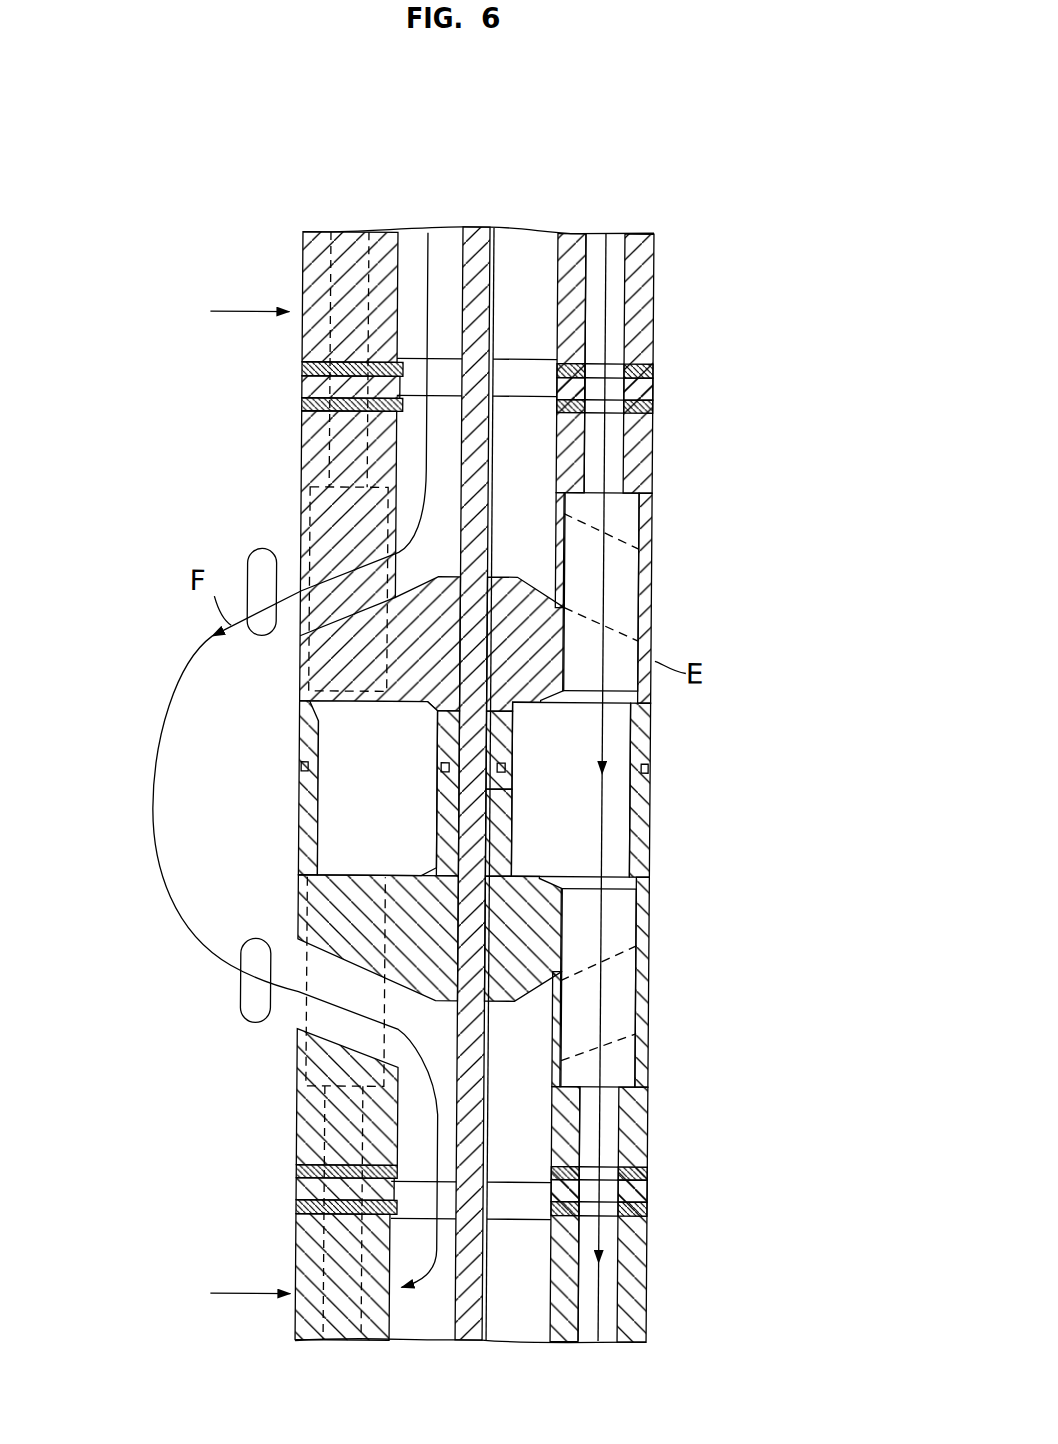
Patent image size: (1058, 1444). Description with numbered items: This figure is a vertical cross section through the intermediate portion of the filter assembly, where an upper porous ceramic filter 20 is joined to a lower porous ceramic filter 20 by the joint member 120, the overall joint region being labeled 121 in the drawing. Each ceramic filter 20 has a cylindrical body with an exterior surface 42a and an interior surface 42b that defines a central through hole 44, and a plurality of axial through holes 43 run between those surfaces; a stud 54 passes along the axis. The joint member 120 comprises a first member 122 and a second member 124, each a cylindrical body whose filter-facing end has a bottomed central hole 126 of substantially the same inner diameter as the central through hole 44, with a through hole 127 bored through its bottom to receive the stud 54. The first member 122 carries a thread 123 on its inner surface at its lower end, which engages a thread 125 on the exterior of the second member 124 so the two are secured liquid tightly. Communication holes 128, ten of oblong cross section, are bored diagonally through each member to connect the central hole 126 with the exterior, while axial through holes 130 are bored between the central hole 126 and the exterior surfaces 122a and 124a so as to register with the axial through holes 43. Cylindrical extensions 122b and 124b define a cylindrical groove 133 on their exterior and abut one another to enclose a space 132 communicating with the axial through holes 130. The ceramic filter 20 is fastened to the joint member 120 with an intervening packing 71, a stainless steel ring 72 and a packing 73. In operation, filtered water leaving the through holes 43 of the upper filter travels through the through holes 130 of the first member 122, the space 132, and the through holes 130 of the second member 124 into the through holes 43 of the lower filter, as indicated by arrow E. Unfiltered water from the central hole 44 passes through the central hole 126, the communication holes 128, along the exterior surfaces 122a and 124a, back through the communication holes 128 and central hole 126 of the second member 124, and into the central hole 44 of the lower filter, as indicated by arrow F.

The porous ceramic filter 20 is at (648, 270).
The axial through holes 43 is at (340, 263).
The central through hole 44 is at (416, 240).
The stud 54 is at (477, 232).
The exterior surface 42a is at (294, 345).
The interior surface 42b is at (395, 308).
The packing 71 is at (650, 373).
The stainless steel ring 72 is at (647, 392).
The packing 73 is at (651, 408).
The joint member 120 is at (680, 745).
The housing 121 is at (712, 270).
The first member 122 is at (302, 455).
The exterior surface 122a is at (295, 507).
The cylindrical extension 122b is at (505, 745).
The thread 123 is at (322, 722).
The second member 124 is at (652, 1108).
The exterior surface 124a is at (296, 905).
The cylindrical extension 124b is at (504, 825).
The thread 125 is at (302, 741).
The central hole 126 is at (451, 557).
The through hole 127 is at (497, 596).
The communication holes 128 is at (251, 567).
The axial through holes 130 is at (320, 432).
The space 132 is at (621, 802).
The cylindrical groove 133 is at (681, 952).